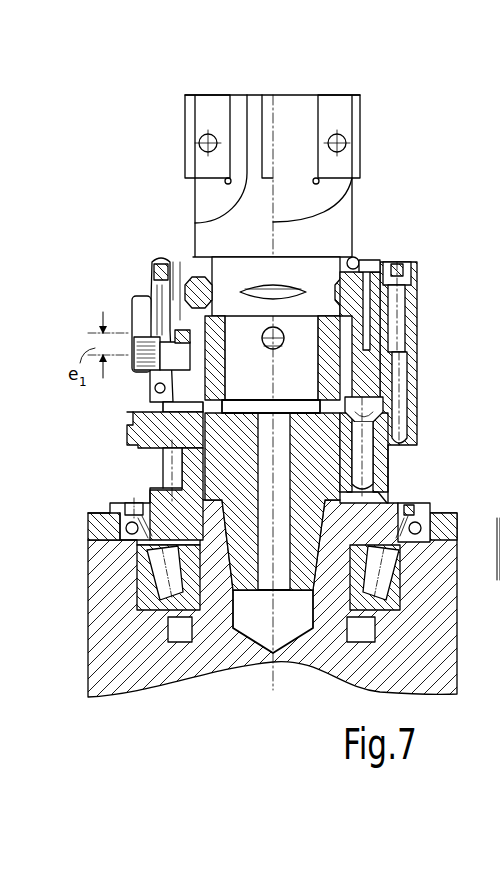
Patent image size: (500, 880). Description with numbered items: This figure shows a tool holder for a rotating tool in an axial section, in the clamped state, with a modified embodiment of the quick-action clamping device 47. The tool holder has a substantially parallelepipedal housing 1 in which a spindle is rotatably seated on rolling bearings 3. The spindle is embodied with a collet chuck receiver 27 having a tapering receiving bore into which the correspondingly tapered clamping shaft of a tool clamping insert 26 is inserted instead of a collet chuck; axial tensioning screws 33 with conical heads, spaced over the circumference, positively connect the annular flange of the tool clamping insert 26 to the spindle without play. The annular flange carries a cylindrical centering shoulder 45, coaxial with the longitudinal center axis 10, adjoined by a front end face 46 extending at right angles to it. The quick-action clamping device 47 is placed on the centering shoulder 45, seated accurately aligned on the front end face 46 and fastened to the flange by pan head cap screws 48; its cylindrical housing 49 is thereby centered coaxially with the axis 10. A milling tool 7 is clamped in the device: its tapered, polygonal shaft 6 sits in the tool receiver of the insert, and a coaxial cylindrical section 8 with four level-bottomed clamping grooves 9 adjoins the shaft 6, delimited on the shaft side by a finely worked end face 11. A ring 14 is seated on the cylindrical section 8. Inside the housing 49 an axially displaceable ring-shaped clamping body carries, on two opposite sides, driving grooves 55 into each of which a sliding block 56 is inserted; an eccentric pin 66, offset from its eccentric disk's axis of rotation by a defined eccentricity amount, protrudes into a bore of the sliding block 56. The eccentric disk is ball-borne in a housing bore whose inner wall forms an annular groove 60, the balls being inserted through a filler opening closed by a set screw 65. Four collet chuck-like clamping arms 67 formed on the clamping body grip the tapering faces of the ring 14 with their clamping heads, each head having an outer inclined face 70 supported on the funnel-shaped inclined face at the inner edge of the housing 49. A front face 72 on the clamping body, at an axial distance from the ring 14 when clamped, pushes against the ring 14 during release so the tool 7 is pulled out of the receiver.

The housing 1 is at (124, 668).
The rolling bearings 3 is at (152, 597).
The shaft 6 is at (259, 387).
The milling tool 7 is at (300, 107).
The cylindrical section 8 is at (307, 265).
The clamping grooves 9 is at (263, 289).
The center axis 10 is at (276, 672).
The end face 11 is at (319, 315).
The ring 14 is at (191, 272).
The tool clamping insert 26 is at (182, 473).
The collet chuck receiver 27 is at (226, 590).
The tensioning screws 33 is at (386, 462).
The centering shoulder 45 is at (369, 425).
The front end face 46 is at (175, 446).
The quick-action clamping device 47 is at (420, 342).
The pan head cap screws 48 is at (402, 312).
The housing 49 is at (416, 393).
The driving grooves 55 is at (163, 406).
The sliding block 56 is at (177, 336).
The annular groove 60 is at (499, 472).
The set screw 65 is at (159, 262).
The eccentric pin 66 is at (150, 376).
The clamping arms 67 is at (411, 262).
The inclined face 70 is at (368, 264).
The front face 72 is at (178, 332).